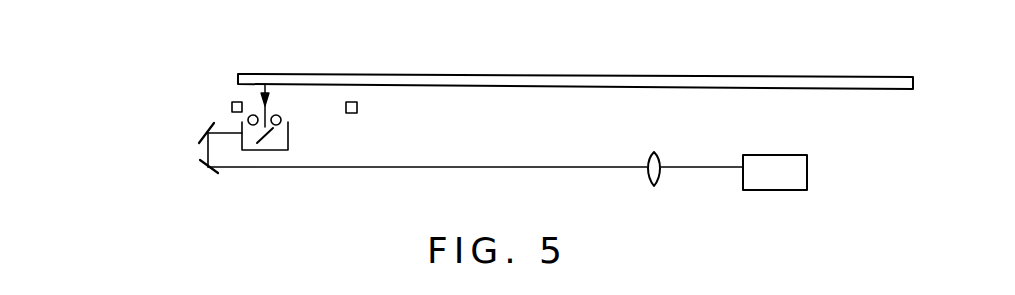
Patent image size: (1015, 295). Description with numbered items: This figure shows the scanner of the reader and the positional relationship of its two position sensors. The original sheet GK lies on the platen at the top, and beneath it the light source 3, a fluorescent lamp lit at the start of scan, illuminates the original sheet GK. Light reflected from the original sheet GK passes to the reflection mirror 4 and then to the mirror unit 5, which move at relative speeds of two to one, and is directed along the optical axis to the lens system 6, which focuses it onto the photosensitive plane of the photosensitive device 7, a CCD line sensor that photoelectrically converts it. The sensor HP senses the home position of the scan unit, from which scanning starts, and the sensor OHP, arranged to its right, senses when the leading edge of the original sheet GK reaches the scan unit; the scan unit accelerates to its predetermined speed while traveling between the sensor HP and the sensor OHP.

The light source 3 is at (253, 114).
The reflection mirror 4 is at (268, 137).
The mirror unit 5 is at (202, 164).
The lens system 6 is at (657, 150).
The photosensitive device 7 is at (777, 155).
The sensor HP is at (231, 107).
The sensor OHP is at (358, 106).
The original sheet GK is at (914, 82).